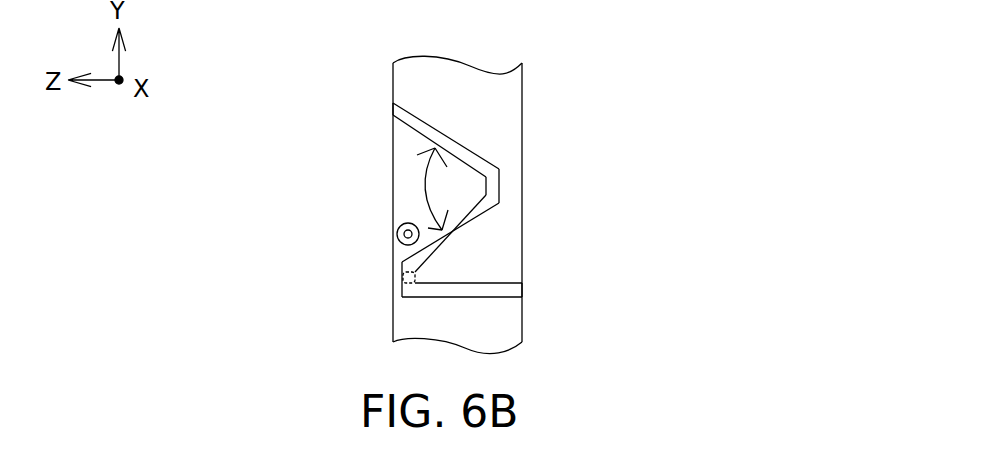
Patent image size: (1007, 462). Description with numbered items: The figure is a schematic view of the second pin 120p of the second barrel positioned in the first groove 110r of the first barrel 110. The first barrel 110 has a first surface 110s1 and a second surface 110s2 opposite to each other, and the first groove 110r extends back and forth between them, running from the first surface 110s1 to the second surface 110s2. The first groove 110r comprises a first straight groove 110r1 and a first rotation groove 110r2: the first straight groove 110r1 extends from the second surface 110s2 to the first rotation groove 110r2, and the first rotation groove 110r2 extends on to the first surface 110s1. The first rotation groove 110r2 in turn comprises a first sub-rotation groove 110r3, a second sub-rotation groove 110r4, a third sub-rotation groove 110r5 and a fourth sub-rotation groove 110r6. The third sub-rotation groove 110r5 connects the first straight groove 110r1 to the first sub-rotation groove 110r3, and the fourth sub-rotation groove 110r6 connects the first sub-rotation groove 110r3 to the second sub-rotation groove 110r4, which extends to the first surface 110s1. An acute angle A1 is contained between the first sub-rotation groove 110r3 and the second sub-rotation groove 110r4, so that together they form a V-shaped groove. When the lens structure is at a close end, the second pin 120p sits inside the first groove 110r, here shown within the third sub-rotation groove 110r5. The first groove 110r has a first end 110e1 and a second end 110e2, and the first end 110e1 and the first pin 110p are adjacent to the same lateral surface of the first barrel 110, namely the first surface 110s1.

The first barrel 110 is at (514, 195).
The first surface 110s1 is at (393, 140).
The second surface 110s2 is at (522, 75).
The first end 110e1 is at (393, 113).
The second end 110e2 is at (503, 292).
The first groove 110r is at (569, 205).
The first straight groove 110r1 is at (457, 292).
The first rotation groove 110r2 is at (579, 185).
The first sub-rotation groove 110r3 is at (452, 235).
The second sub-rotation groove 110r4 is at (440, 138).
The third sub-rotation groove 110r5 is at (531, 278).
The fourth sub-rotation groove 110r6 is at (495, 187).
The first pin 110p is at (397, 233).
The second pin 120p is at (403, 282).
The acute angle A1 is at (423, 188).